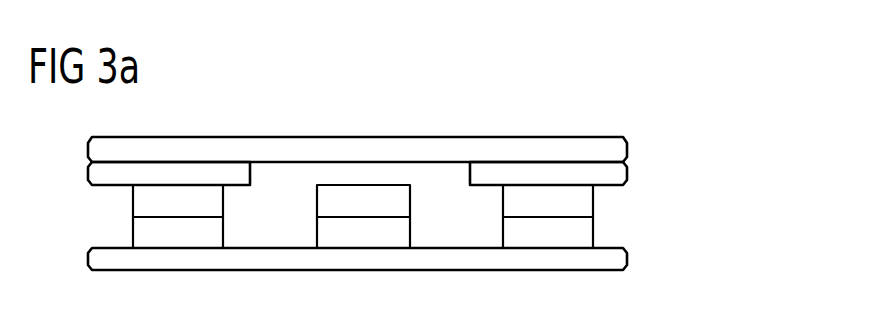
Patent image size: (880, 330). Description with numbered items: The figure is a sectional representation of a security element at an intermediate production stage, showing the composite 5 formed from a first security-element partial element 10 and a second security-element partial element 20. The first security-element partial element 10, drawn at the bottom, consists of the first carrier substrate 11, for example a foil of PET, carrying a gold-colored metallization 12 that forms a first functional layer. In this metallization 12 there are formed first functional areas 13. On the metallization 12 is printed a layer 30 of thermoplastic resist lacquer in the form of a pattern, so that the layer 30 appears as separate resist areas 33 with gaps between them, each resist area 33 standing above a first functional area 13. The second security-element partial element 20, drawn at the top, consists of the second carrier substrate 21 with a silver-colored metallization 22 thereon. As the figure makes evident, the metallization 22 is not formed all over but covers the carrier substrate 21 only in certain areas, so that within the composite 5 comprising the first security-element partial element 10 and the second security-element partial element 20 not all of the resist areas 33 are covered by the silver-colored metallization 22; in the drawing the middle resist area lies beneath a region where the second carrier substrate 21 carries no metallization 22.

The composite 5 is at (53, 140).
The first security-element partial element 10 is at (688, 220).
The first carrier substrate 11 is at (628, 264).
The metallization 12 is at (631, 219).
The first functional areas 13 is at (143, 240).
The second security-element partial element 20 is at (697, 137).
The second carrier substrate 21 is at (628, 159).
The metallization 22 is at (628, 182).
The layer of thermoplastic resist lacquer 30 is at (631, 186).
The resist areas 33 is at (143, 211).